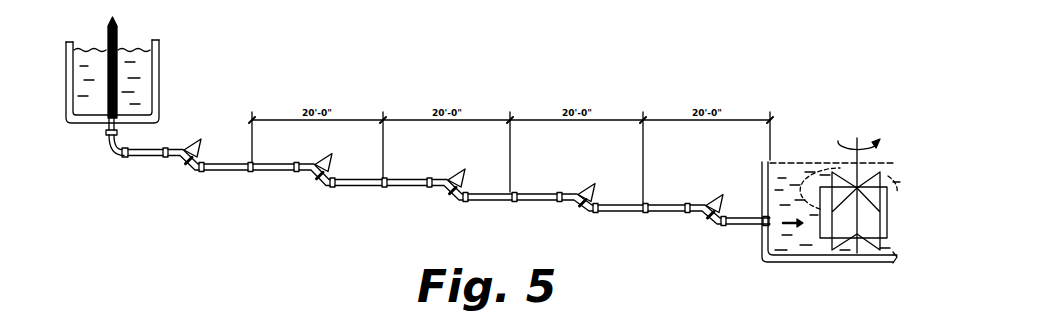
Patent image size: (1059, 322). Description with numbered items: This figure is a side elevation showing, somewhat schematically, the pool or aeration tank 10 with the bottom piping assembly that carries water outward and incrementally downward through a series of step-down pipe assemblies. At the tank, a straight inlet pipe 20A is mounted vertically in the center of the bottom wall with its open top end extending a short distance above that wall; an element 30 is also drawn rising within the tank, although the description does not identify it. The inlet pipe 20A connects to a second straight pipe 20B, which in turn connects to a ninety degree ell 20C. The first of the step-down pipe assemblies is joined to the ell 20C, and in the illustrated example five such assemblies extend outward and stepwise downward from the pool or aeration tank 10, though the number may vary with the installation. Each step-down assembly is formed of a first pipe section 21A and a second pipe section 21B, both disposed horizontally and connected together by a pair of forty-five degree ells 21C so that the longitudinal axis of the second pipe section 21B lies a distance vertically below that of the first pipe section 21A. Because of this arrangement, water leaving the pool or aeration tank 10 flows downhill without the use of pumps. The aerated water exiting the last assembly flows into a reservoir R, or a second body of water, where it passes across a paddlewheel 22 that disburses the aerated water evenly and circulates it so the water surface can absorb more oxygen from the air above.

The pool or aeration tank 10 is at (167, 62).
The standpipe / rod 30 is at (120, 37).
The straight inlet pipe 20A is at (119, 123).
The second straight pipe 20B is at (106, 137).
The 90° ell 20C is at (106, 157).
The first pipe section 21A is at (148, 160).
The second pipe section 21B is at (219, 175).
The 45° ells 21C is at (204, 135).
The paddlewheel 22 is at (820, 228).
The reservoir R is at (784, 166).